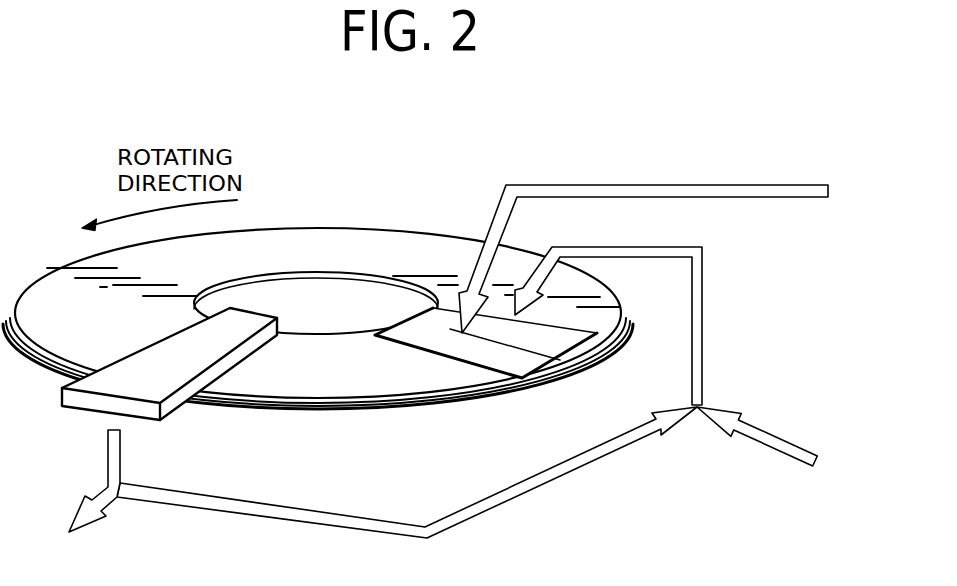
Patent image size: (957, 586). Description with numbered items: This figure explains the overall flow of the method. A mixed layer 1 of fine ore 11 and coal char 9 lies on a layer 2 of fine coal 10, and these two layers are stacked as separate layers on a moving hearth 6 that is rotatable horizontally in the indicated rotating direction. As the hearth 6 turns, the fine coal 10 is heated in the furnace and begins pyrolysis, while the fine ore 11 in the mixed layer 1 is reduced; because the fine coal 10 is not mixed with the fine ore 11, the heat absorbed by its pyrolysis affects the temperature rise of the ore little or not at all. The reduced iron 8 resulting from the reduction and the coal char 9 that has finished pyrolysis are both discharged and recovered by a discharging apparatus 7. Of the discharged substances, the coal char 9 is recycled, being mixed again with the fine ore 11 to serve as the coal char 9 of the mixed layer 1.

The mixed layer 1 is at (358, 245).
The fine coal layer 2 is at (485, 352).
The moving hearth 6 is at (333, 368).
The discharging apparatus 7 is at (112, 387).
The reduced iron 8 is at (83, 496).
The coal char 9 is at (275, 513).
The fine coal 10 is at (665, 256).
The fine ore 11 is at (687, 363).